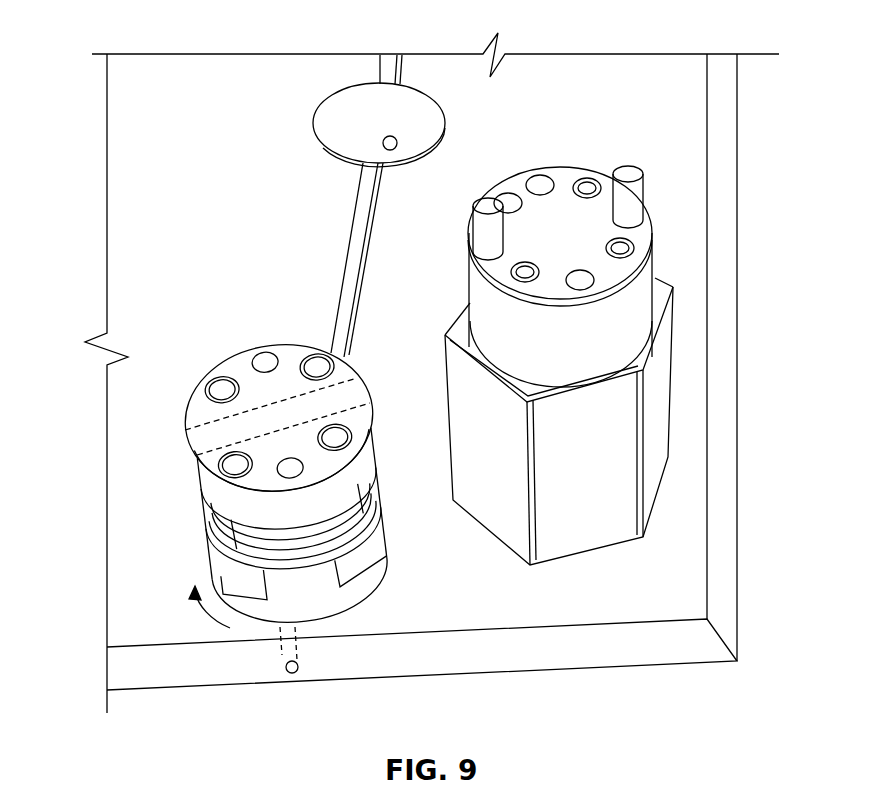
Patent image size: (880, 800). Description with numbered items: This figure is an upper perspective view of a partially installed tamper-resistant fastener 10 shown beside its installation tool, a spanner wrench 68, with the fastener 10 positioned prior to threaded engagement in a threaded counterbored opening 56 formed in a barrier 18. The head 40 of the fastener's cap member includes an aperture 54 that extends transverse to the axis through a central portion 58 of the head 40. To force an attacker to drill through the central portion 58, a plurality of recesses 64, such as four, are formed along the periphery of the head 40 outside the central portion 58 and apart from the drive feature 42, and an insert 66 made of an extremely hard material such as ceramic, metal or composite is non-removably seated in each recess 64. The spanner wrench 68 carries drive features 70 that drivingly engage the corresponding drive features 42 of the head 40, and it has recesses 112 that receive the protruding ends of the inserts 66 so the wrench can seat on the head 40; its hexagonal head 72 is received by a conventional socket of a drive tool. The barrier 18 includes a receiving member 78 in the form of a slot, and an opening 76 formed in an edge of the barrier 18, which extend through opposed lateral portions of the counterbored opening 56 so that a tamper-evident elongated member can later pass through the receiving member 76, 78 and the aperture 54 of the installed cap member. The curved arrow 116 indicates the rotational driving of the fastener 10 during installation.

The tamper-resistant fastener 10 is at (230, 440).
The barrier 18 is at (107, 93).
The head 40 is at (294, 530).
The drive feature 42 is at (277, 415).
The aperture 54 is at (279, 418).
The threaded counterbored opening 56 is at (447, 124).
The central portion 58 is at (205, 420).
The recesses 64 is at (278, 415).
The insert 66 is at (279, 415).
The spanner wrench 68 is at (646, 335).
The drive feature 70 is at (483, 207).
The hexagonal head 72 is at (673, 387).
The opening 76 is at (294, 676).
The receiving member 78 is at (378, 70).
The recesses 112 is at (637, 248).
The rotation arrow 116 is at (210, 612).